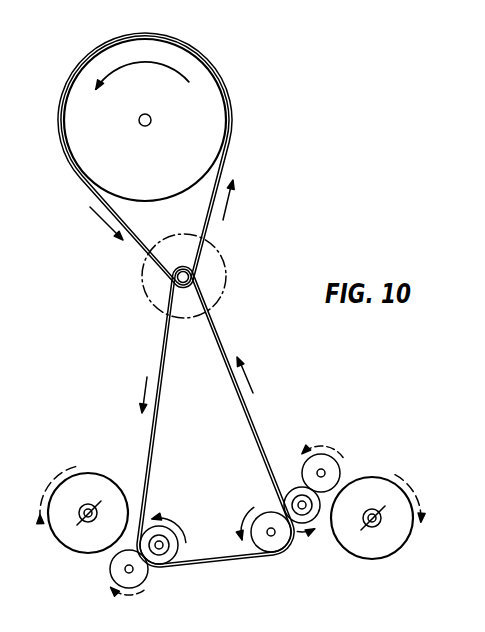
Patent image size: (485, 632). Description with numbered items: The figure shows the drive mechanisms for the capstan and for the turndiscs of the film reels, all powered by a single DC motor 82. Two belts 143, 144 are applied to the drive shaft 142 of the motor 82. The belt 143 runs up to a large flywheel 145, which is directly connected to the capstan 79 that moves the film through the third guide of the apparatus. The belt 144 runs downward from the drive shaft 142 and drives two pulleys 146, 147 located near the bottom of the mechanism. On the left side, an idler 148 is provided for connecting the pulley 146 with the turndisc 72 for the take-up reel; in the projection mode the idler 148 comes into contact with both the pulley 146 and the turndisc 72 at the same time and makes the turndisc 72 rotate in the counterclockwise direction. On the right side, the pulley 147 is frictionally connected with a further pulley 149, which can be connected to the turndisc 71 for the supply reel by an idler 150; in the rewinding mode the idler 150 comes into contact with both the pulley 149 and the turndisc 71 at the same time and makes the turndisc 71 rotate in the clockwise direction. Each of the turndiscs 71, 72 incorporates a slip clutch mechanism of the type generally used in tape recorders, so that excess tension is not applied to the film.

The flywheel 145 is at (223, 91).
The capstan 79 is at (150, 125).
The belt 143 is at (223, 163).
The drive shaft 142 is at (172, 282).
The DC motor 82 is at (229, 278).
The belt 144 is at (248, 410).
The pulley 146 is at (157, 525).
The pulley 147 is at (268, 510).
The idler 148 is at (148, 574).
The pulley 149 is at (288, 490).
The idler 150 is at (340, 468).
The turndisc 71 is at (398, 547).
The turndisc 72 is at (58, 537).